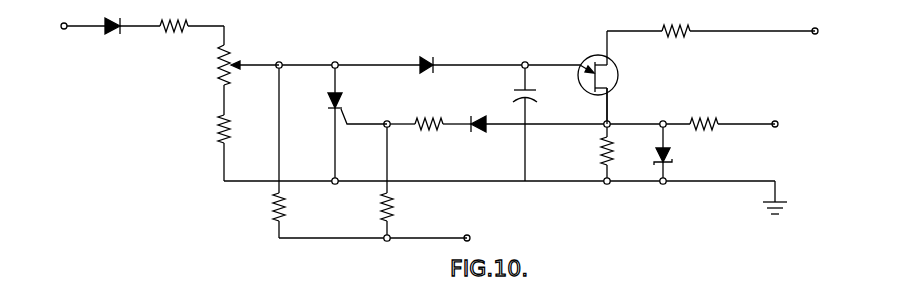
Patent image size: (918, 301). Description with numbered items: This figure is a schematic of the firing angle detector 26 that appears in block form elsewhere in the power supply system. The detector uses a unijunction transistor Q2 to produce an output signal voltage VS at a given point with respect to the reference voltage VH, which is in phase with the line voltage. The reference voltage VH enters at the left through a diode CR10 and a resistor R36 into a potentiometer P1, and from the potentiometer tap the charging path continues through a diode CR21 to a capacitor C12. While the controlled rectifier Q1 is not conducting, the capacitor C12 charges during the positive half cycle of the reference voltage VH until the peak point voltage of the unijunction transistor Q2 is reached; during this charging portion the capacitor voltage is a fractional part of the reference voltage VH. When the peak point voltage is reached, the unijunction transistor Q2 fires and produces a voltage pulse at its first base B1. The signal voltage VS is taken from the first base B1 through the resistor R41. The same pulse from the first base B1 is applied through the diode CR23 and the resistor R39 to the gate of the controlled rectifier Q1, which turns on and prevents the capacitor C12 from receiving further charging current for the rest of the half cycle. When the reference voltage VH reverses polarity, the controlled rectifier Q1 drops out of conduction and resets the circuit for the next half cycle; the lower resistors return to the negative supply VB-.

The diode CR10 is at (111, 38).
The resistor R36 is at (182, 38).
The potentiometer P1 is at (234, 56).
The controlled rectifier Q1 is at (344, 103).
The diode CR21 is at (426, 58).
The capacitor C12 is at (517, 96).
The unijunction transistor Q2 is at (597, 56).
The first base B1 is at (604, 96).
The resistor R39 is at (442, 116).
The diode CR23 is at (484, 131).
The resistor R41 is at (722, 117).
The firing angle detector 26 is at (170, 189).
The reference voltage VH is at (49, 24).
The signal voltage VS is at (788, 124).
The negative bias voltage VB- is at (483, 236).